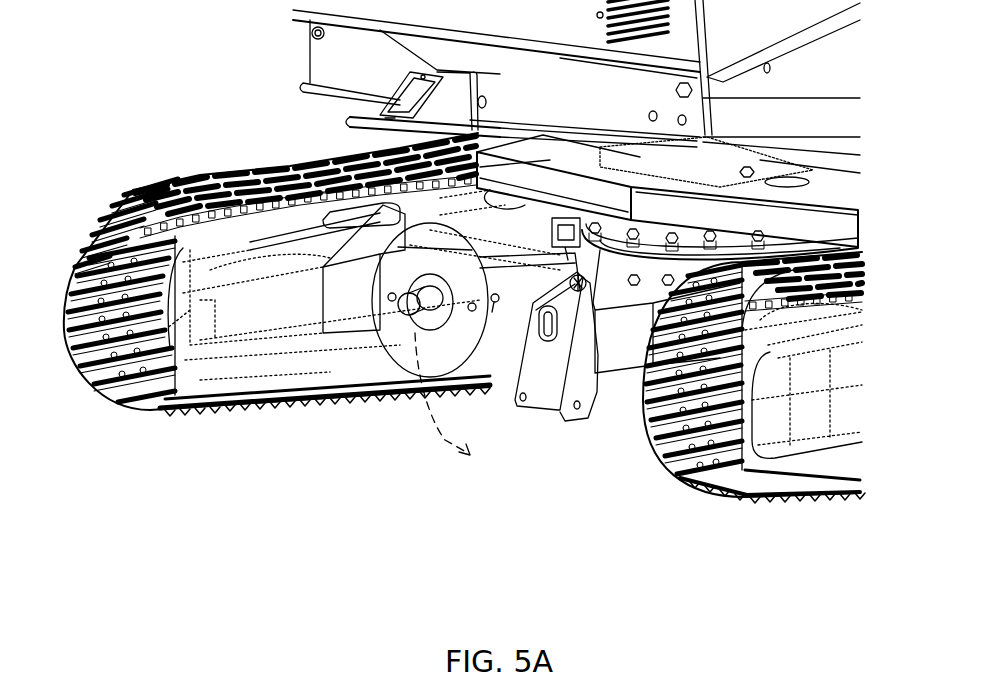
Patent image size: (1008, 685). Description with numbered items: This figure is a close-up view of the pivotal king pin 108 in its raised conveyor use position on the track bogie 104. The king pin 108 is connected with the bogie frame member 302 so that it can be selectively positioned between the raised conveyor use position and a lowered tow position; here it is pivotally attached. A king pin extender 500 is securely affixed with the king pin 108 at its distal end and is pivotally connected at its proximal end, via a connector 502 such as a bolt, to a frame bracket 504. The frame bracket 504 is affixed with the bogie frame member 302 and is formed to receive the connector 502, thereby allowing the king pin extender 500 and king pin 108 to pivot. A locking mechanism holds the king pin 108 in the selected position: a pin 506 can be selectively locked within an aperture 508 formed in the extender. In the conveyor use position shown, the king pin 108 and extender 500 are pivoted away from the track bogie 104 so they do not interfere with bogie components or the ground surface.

The track bogie 104 is at (303, 143).
The king pin 108 is at (410, 312).
The bogie frame member 302 is at (633, 353).
The king pin extender 500 is at (527, 284).
The connector 502 is at (578, 291).
The frame bracket 504 is at (593, 392).
The pin 506 is at (558, 342).
The aperture 508 is at (494, 303).